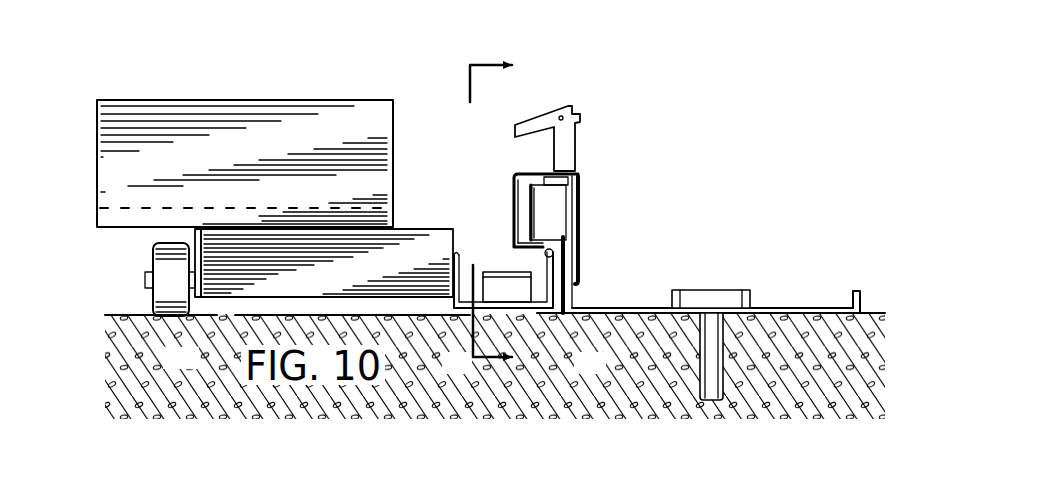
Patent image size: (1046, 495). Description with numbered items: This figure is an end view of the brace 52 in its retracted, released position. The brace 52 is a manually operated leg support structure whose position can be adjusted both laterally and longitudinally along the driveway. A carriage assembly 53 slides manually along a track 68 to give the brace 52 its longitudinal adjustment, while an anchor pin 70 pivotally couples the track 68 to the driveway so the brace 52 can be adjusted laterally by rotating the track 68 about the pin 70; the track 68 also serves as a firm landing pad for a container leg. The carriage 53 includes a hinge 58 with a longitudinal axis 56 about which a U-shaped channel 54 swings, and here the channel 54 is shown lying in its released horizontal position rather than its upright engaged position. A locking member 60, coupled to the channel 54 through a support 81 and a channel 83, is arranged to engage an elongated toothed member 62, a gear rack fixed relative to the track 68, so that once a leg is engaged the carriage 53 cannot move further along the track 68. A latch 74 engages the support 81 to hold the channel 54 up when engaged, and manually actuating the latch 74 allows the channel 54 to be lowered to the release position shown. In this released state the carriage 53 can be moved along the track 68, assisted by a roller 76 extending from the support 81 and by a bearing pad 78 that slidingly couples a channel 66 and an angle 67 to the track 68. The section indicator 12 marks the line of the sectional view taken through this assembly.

The section line 12- 12 is at (477, 212).
The brace 52 is at (656, 165).
The carriage assembly 53 is at (332, 70).
The U-shaped channel 54 is at (394, 147).
The longitudinal axis 56 is at (553, 250).
The hinge 58 is at (518, 260).
The locking member 60 is at (502, 288).
The elongated toothed member 62 is at (545, 200).
The channel 66 is at (512, 195).
The angle 67 is at (567, 238).
The track 68 is at (579, 232).
The anchor pin 70 is at (717, 290).
The latch 74 is at (542, 113).
The roller 76 is at (150, 243).
The bearing pad 78 is at (558, 180).
The support 81 is at (233, 300).
The channel 83 is at (520, 311).